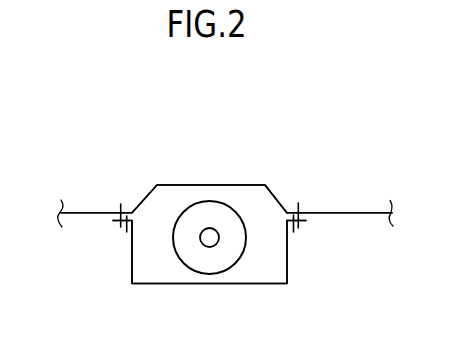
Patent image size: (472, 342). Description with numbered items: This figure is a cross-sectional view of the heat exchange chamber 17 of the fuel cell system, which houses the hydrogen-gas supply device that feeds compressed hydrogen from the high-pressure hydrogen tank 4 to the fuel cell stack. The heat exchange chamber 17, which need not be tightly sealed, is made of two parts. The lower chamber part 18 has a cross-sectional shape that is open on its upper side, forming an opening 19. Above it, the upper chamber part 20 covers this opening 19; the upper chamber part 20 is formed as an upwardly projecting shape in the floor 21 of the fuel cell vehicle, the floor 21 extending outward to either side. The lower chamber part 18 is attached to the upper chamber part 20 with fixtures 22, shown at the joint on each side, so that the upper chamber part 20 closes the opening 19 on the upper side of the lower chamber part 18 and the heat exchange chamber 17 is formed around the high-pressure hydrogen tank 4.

The high-pressure hydrogen tank 4 is at (206, 262).
The heat exchange chamber 17 is at (303, 275).
The lower chamber part 18 is at (131, 268).
The opening 19 is at (137, 222).
The upper chamber part 20 is at (230, 185).
The floor 21 is at (348, 213).
The fixtures 22 is at (117, 229).